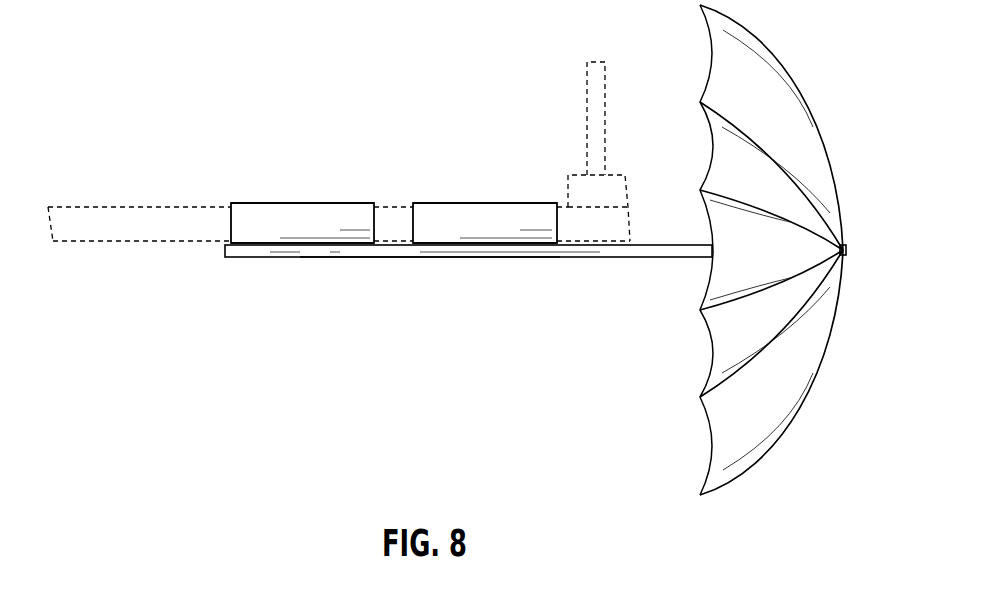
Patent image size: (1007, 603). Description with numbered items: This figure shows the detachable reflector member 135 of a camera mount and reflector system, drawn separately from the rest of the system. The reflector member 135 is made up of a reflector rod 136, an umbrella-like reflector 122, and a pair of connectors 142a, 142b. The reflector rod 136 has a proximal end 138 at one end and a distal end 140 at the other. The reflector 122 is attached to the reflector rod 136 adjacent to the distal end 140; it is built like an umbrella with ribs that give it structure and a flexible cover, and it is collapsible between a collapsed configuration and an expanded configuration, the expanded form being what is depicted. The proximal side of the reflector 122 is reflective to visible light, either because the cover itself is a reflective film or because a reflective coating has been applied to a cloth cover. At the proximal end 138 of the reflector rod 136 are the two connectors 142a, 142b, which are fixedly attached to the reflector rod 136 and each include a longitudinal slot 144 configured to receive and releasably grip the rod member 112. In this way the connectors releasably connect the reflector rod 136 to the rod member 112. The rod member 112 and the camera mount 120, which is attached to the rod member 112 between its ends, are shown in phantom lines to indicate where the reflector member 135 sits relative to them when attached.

The rod member 112 is at (145, 207).
The camera mount 120 is at (587, 100).
The reflector 122 is at (710, 355).
The reflector member 135 is at (302, 290).
The reflector rod 136 is at (428, 258).
The proximal end 138 is at (225, 247).
The distal end 140 is at (846, 250).
The connector 142a is at (302, 203).
The connector 142b is at (466, 203).
The longitudinal slot 144 is at (264, 203).